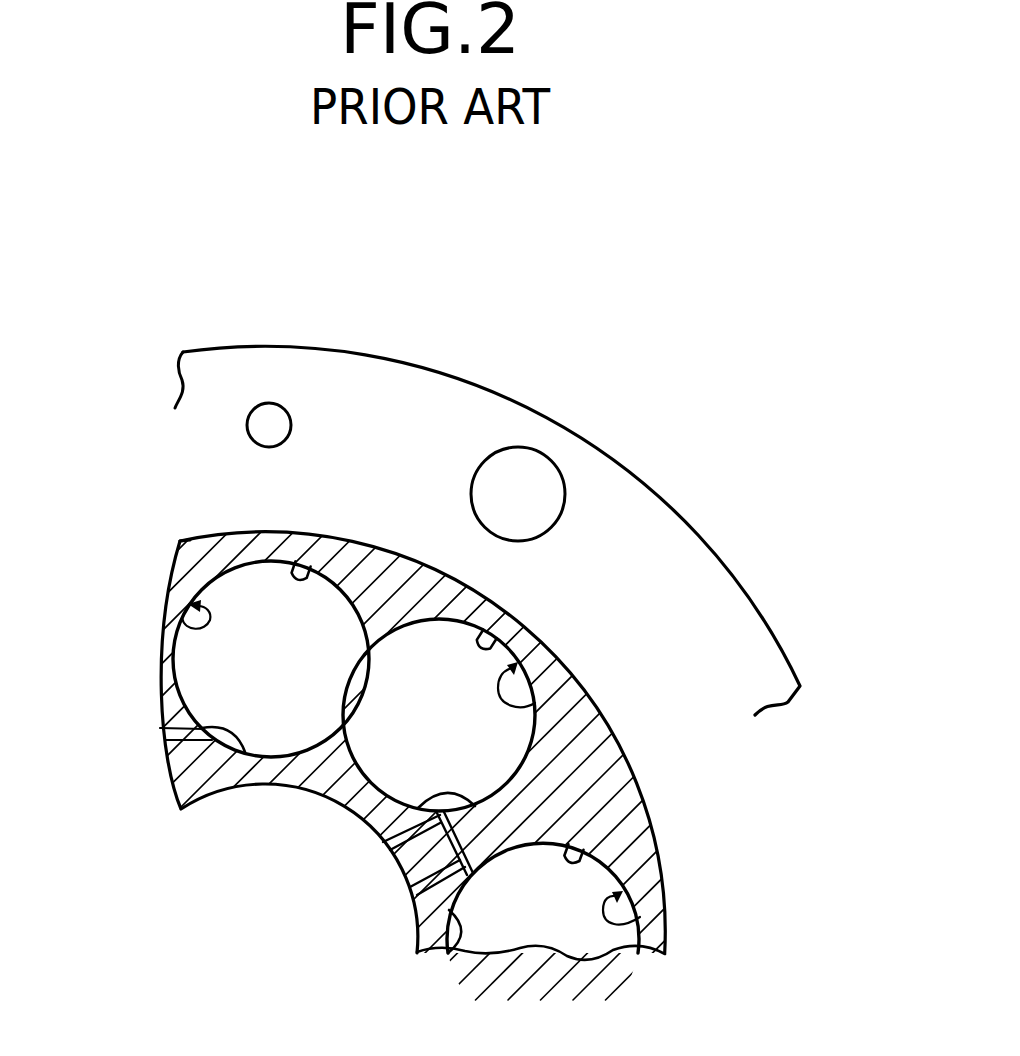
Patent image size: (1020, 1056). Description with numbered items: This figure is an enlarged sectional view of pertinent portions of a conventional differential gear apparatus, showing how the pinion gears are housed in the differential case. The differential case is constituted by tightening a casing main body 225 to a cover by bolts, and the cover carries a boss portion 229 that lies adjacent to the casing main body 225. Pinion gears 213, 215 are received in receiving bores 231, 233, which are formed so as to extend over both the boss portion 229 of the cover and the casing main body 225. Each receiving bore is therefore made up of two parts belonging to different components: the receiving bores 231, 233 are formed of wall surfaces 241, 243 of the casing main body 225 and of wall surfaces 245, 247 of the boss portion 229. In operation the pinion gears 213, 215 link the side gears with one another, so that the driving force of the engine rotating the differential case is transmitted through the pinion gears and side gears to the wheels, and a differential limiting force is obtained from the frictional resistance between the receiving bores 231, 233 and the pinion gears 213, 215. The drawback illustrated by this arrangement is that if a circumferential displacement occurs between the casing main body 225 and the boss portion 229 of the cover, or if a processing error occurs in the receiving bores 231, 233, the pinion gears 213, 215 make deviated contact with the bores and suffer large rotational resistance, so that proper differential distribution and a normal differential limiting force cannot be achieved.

The pinion gear 213 is at (320, 683).
The pinion gear 215 is at (485, 738).
The casing main body 225 is at (623, 465).
The boss portion 229 is at (190, 770).
The receiving bore 231 is at (183, 618).
The receiving bore 233 is at (535, 703).
The wall surface 241 is at (311, 576).
The wall surface 243 is at (497, 640).
The wall surface 245 is at (160, 728).
The wall surface 247 is at (488, 803).